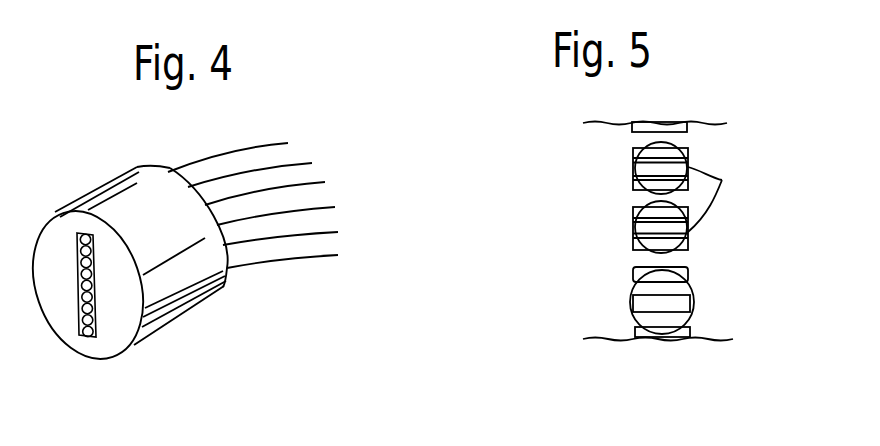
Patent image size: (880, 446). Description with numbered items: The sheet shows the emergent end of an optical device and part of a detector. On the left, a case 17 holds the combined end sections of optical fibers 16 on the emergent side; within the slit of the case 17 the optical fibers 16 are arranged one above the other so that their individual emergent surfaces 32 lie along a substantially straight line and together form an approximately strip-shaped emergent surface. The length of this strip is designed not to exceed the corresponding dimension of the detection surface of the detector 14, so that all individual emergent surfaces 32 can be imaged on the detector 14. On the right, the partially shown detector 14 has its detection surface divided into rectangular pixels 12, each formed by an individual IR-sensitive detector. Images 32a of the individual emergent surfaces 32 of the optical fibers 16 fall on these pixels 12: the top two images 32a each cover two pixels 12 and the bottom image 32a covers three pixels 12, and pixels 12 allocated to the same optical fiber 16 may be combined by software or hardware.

In FIG. 5, the pixels 12 is at (632, 183).
In FIG. 5, the detector 14 is at (702, 116).
In FIG. 4, the optical fibers 16 is at (288, 192).
In FIG. 4, the case 17 is at (102, 202).
In FIG. 4, the individual emergent surfaces 32 is at (80, 318).
In FIG. 5, the images 32a is at (722, 180).